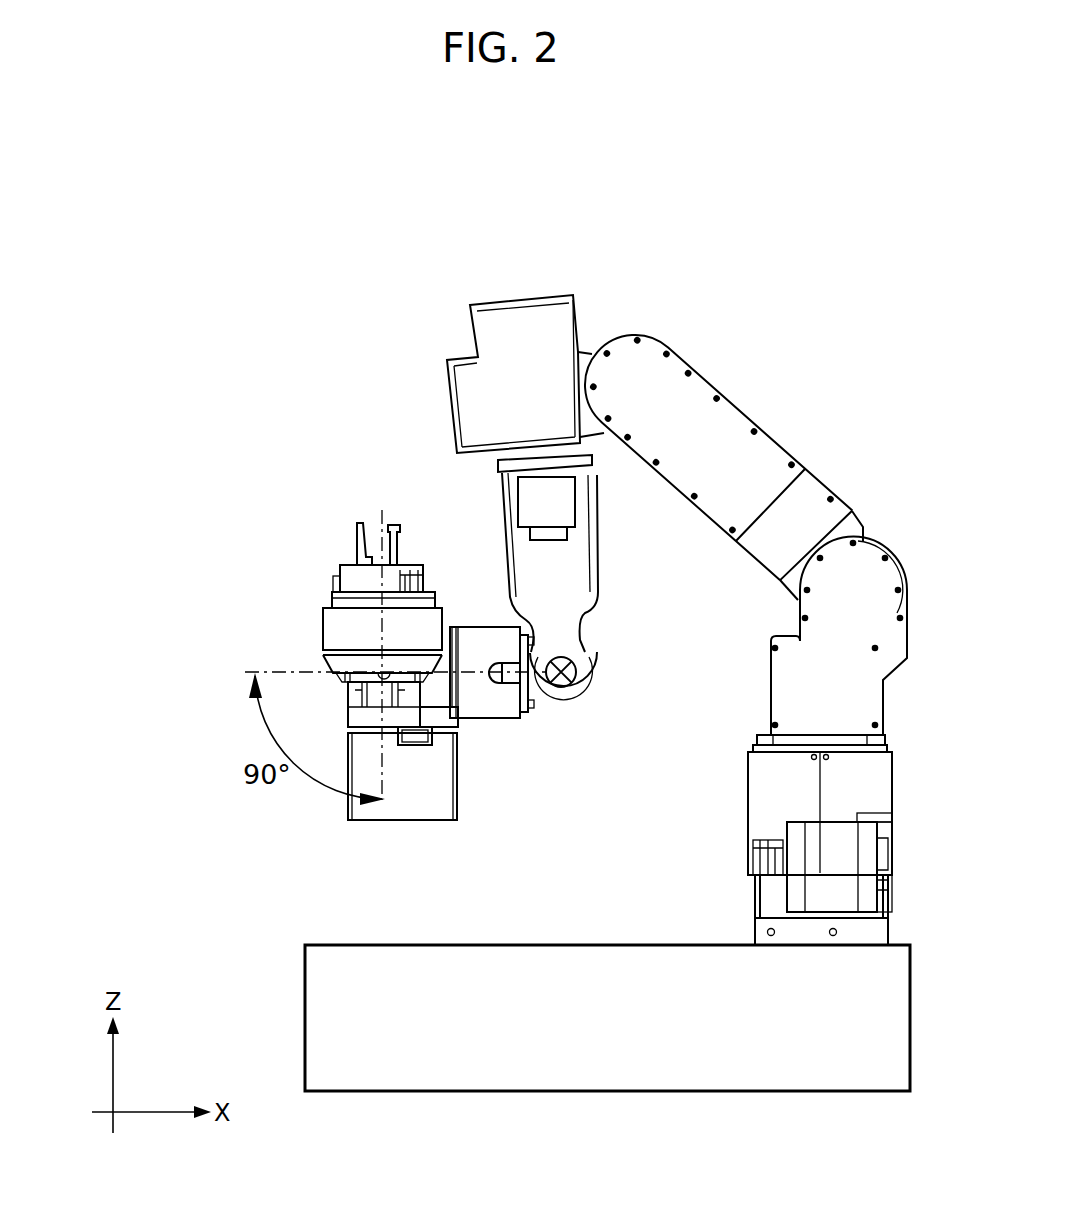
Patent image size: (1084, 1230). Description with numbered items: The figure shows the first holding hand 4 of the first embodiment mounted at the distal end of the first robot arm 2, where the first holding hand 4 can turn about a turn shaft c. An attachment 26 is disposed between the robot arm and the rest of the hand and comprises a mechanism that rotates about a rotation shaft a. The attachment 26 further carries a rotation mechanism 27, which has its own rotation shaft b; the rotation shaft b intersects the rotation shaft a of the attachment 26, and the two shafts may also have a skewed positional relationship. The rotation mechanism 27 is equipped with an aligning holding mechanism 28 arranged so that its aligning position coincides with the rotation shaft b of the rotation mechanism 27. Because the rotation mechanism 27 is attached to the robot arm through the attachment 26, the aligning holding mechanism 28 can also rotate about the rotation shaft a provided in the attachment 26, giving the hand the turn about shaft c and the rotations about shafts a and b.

The first robot arm 2 is at (704, 322).
The first holding hand 4 is at (212, 465).
The attachment 26 is at (493, 700).
The rotation mechanism 27 is at (398, 693).
The aligning holding mechanism 28 is at (350, 640).
The rotation shaft a is at (385, 674).
The rotation shaft b is at (383, 640).
The turn shaft c is at (571, 652).